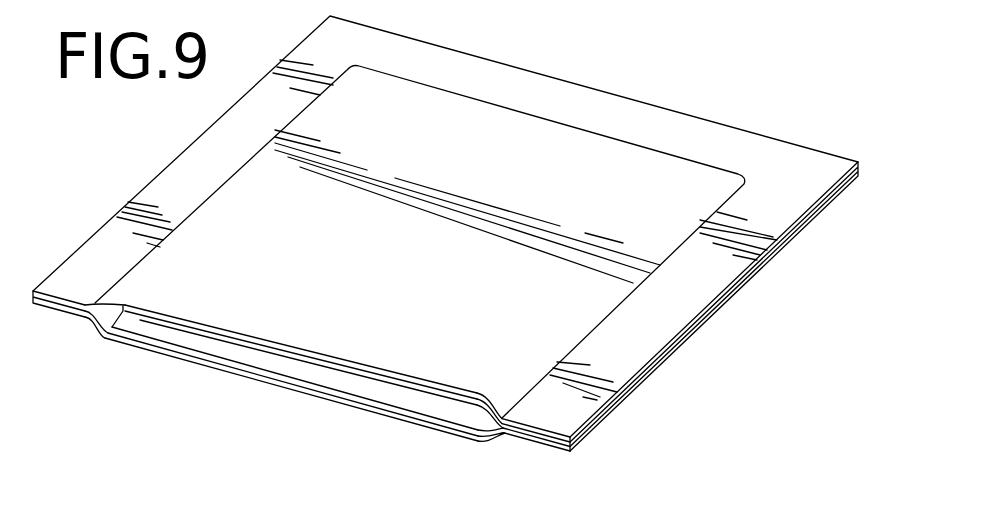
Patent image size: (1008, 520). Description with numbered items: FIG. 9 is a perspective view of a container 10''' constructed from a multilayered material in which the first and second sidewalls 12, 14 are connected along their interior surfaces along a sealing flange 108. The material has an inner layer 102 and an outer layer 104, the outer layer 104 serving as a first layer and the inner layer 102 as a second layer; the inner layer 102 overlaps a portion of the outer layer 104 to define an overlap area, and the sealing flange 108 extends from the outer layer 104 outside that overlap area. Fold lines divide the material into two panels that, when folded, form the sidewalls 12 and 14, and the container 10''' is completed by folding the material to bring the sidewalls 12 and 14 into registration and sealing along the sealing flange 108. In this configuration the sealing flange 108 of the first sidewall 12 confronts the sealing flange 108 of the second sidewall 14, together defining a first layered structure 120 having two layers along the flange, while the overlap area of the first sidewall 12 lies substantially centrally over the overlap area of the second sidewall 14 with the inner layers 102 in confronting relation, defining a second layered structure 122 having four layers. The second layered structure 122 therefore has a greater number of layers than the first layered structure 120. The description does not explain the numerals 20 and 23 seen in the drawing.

The container 10''' is at (445, 233).
The inner sheet 20 is at (405, 251).
The first sidewall 12 is at (140, 343).
The second sidewall 14 is at (192, 347).
The inner layer 102 is at (252, 350).
The outer layer 104 is at (322, 395).
The mouth opening 23 is at (445, 398).
The second layered structure 122 is at (460, 437).
The sealing flange 108 is at (537, 417).
The first layered structure 120 is at (559, 461).